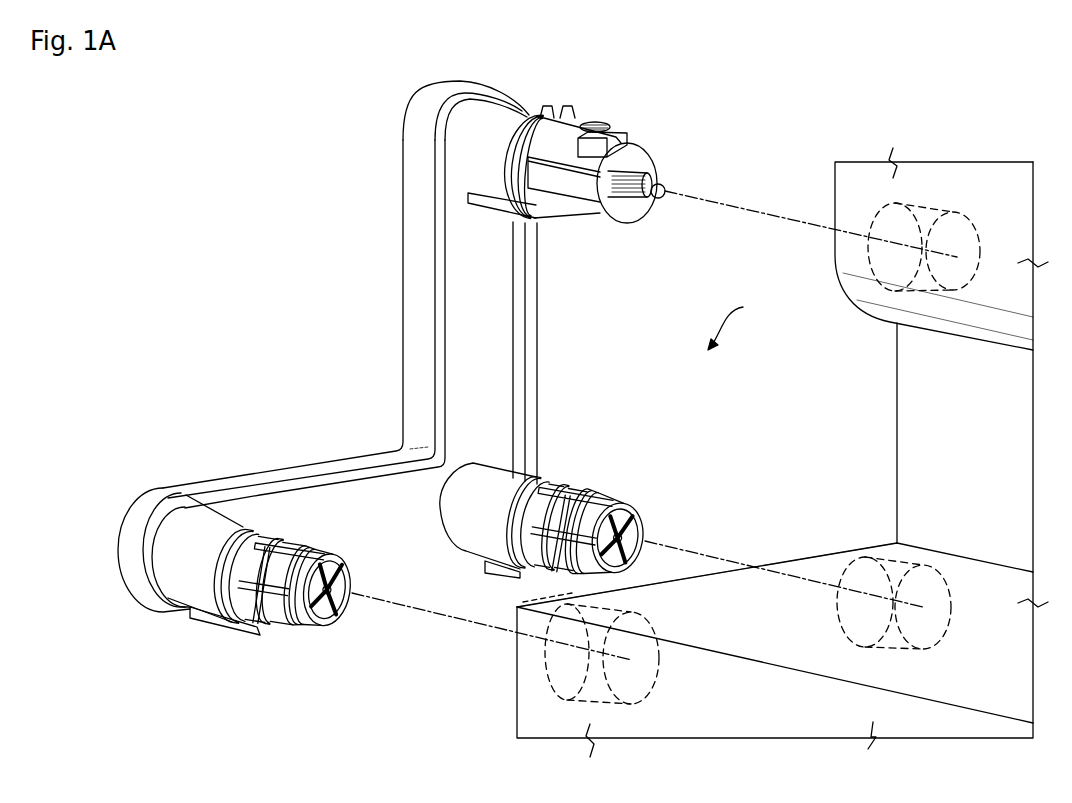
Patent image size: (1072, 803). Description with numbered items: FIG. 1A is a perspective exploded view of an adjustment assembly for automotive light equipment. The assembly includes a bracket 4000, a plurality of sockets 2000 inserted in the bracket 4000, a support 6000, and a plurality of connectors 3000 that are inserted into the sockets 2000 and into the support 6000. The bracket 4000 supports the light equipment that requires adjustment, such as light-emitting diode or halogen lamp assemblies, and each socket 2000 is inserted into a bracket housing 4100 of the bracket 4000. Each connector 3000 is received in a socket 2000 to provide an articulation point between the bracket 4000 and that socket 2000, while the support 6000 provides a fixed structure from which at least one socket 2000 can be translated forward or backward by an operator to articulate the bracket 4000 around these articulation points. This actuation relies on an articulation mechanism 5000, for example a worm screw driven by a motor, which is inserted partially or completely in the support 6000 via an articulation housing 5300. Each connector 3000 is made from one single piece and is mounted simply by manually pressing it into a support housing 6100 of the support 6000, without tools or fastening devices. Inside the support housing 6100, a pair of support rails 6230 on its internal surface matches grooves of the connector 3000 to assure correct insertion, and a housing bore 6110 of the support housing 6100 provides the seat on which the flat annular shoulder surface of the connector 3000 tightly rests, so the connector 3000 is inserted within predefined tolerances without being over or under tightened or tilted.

The socket 2000 is at (265, 627).
The connector 3000 is at (560, 478).
The bracket 4000 is at (390, 285).
The bracket housing 4100 is at (182, 577).
The articulation mechanism 5000 is at (599, 115).
The articulation housing 5300 is at (578, 121).
The support 6000 is at (872, 412).
The support housing 6100 is at (872, 512).
The housing bore 6110 is at (860, 547).
The support rails 6230 is at (907, 556).